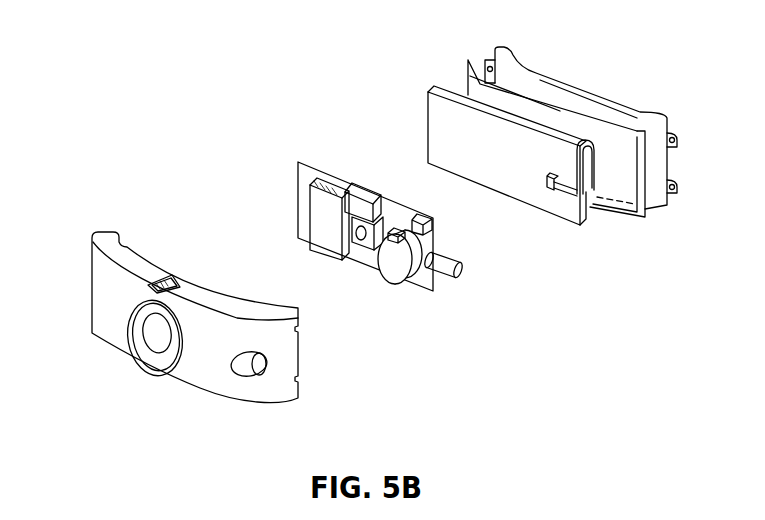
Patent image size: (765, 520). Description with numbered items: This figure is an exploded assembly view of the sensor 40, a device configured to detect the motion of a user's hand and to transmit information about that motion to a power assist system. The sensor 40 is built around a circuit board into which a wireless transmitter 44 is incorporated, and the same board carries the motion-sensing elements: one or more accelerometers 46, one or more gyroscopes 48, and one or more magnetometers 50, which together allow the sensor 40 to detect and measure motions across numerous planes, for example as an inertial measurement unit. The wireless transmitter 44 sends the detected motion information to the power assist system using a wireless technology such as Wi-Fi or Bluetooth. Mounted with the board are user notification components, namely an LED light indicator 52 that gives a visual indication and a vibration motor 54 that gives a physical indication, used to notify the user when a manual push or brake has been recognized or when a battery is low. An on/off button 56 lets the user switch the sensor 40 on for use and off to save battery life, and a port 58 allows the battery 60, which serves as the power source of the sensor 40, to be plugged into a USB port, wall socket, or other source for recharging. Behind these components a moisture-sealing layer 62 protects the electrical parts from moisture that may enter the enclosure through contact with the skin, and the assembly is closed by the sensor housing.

The sensor 40 is at (198, 118).
The wireless transmitter 44 is at (333, 197).
The accelerometer 46 is at (515, 238).
The gyroscope 48 is at (515, 238).
The magnetometer 50 is at (432, 226).
The LED light indicator 52 is at (462, 270).
The vibration motor 54 is at (397, 272).
The on/off button 56 is at (360, 243).
The port 58 is at (370, 188).
The battery 60 is at (458, 118).
The moisture-sealing layer 62 is at (612, 157).